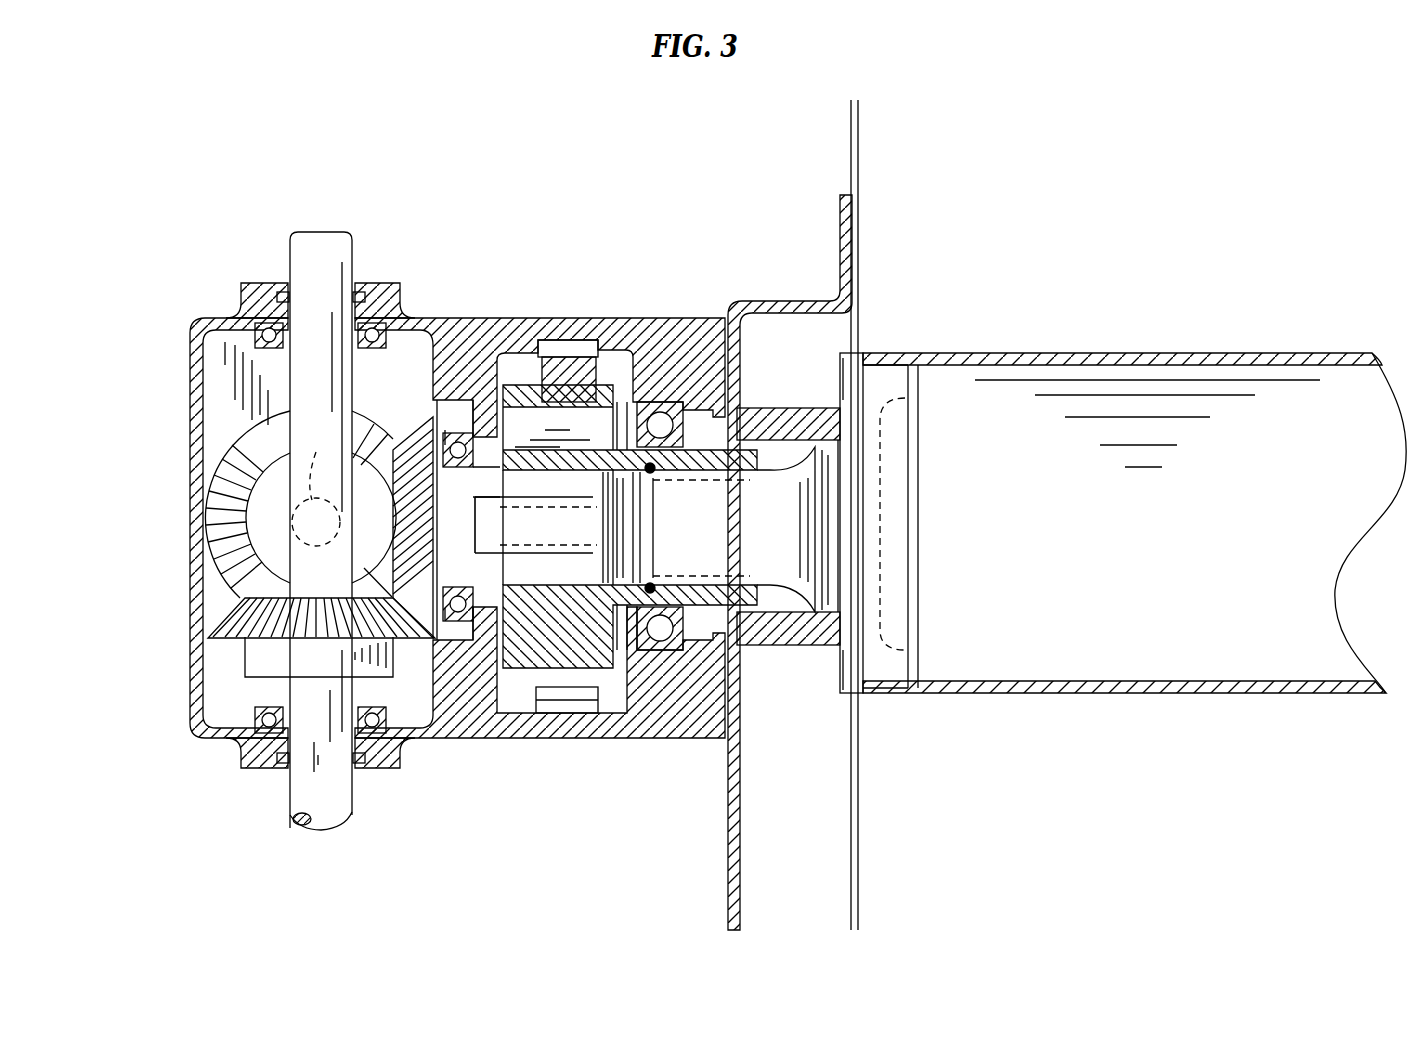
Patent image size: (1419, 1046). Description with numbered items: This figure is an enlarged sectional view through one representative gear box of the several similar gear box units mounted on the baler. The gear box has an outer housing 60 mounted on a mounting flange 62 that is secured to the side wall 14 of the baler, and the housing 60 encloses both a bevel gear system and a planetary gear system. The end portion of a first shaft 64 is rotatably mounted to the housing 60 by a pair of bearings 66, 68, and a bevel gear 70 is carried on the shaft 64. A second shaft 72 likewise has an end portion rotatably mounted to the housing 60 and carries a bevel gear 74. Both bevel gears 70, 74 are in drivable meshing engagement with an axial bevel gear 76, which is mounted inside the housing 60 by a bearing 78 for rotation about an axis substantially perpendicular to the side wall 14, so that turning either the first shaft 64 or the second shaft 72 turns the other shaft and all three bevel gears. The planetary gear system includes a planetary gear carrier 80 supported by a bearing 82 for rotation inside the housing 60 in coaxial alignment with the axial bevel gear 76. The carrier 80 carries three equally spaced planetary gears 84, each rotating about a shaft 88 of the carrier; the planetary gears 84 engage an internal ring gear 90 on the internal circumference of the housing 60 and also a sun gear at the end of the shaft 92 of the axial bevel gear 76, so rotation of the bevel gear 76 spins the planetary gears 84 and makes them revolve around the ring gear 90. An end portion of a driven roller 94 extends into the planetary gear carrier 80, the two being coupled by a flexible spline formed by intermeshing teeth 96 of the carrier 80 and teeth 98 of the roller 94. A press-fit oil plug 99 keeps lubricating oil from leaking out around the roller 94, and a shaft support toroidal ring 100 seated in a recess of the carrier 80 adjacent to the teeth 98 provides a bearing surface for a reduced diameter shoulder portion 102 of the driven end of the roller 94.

The side wall 14 is at (853, 147).
The outer housing 60 is at (452, 318).
The mounting flange 62 is at (762, 300).
The first shaft 64 is at (340, 800).
The bearing 66 is at (380, 316).
The bearing 68 is at (398, 750).
The bevel gear 70 is at (233, 637).
The second shaft 72 is at (316, 483).
The bevel gear 74 is at (215, 462).
The axial bevel gear 76 is at (435, 422).
The bearing 78 is at (462, 437).
The planetary gear carrier 80 is at (527, 665).
The bearing 82 is at (658, 648).
The planetary gear 84 is at (553, 375).
The shaft 88 is at (657, 318).
The internal ring gear 90 is at (588, 342).
The shaft 92 is at (527, 523).
The driven roller 94 is at (1003, 690).
The teeth 96 is at (690, 575).
The teeth 98 is at (712, 585).
The press-fit oil plug 99 is at (613, 521).
The shaft support toroidal ring 100 is at (652, 472).
The reduced diameter shoulder portion 102 is at (648, 560).